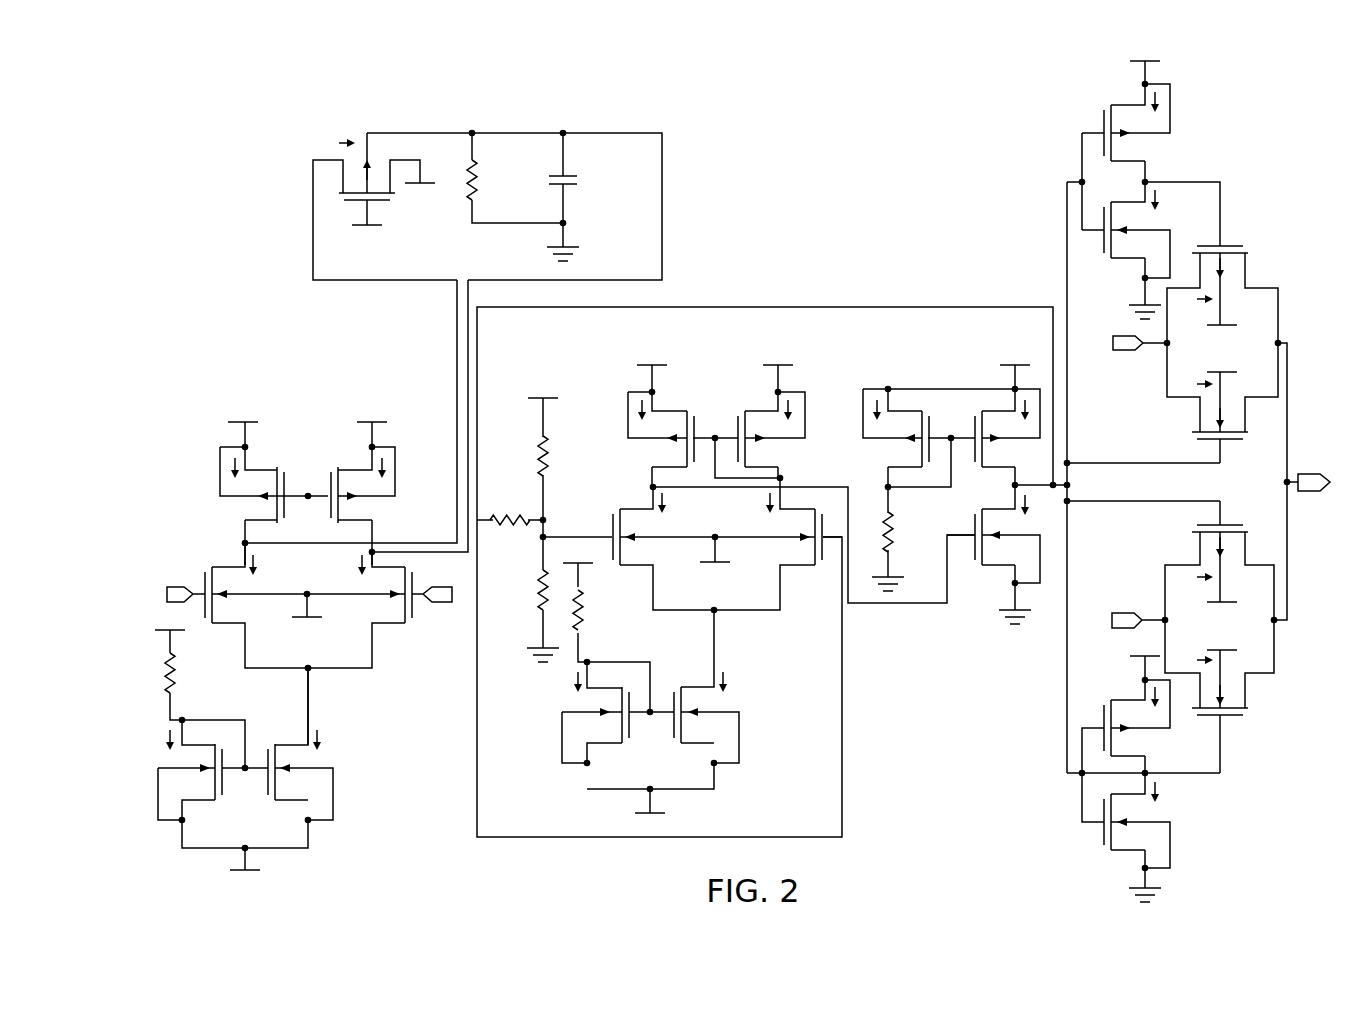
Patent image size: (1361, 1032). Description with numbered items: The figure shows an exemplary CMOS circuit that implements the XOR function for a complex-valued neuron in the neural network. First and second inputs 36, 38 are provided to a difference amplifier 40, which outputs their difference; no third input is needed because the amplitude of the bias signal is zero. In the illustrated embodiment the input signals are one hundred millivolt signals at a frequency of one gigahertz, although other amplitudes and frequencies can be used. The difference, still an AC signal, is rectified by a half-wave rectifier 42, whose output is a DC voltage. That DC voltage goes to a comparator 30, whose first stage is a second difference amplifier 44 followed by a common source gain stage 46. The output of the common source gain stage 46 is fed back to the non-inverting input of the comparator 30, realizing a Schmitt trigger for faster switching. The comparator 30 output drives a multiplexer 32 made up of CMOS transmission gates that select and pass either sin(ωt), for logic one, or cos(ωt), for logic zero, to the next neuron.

The comparator 30 is at (815, 270).
The multiplexer 32 is at (1096, 100).
The first input 36 is at (176, 584).
The second input 38 is at (400, 636).
The difference amplifier 40 is at (405, 477).
The half-wave rectifier 42 is at (492, 97).
The second difference amplifier 44 is at (817, 419).
The common source gain stage 46 is at (909, 340).